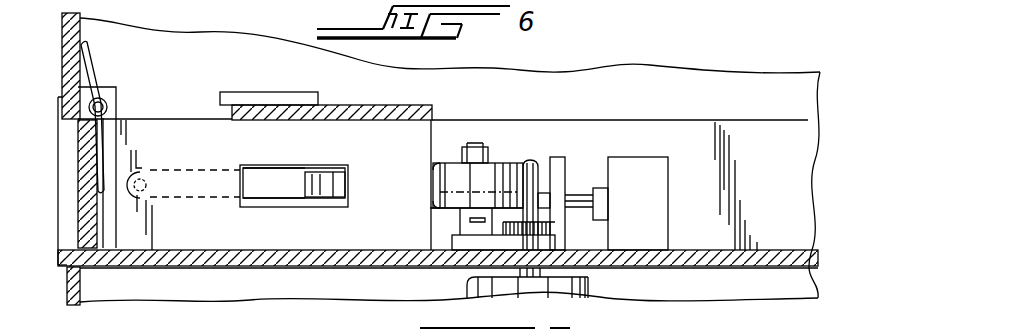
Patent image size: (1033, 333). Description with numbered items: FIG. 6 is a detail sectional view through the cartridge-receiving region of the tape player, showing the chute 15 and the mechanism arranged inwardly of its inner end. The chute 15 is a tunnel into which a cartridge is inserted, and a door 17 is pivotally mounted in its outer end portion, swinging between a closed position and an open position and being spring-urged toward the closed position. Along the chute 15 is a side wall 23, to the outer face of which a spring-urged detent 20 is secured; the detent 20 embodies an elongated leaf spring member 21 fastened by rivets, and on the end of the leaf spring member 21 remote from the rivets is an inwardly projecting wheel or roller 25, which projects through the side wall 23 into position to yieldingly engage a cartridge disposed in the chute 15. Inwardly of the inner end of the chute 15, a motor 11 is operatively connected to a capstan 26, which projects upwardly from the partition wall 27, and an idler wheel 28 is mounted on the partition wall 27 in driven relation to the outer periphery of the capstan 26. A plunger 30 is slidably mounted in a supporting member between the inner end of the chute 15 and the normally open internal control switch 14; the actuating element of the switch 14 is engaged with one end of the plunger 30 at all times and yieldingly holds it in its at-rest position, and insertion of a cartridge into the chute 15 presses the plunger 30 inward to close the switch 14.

The motor 11 is at (588, 282).
The internal control switch 14 is at (657, 212).
The chute 15 is at (392, 110).
The door 17 is at (80, 155).
The detent 20 is at (253, 178).
The leaf spring member 21 is at (285, 183).
The side wall 23 is at (397, 168).
The roller 25 is at (335, 188).
The capstan 26 is at (533, 168).
The partition wall 27 is at (158, 258).
The idler wheel 28 is at (503, 168).
The plunger 30 is at (576, 196).